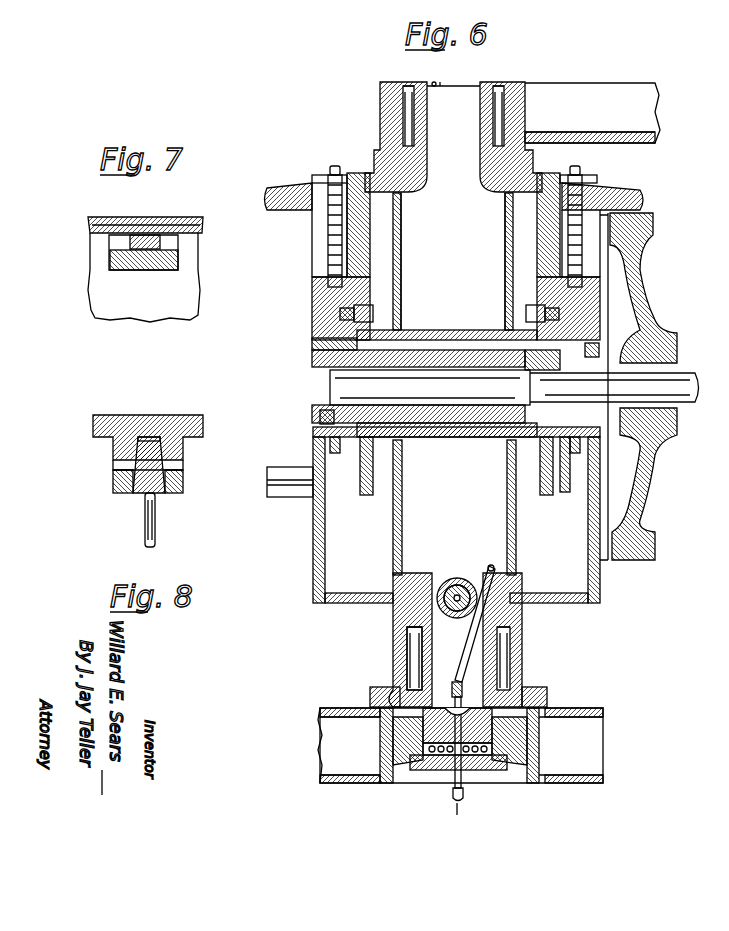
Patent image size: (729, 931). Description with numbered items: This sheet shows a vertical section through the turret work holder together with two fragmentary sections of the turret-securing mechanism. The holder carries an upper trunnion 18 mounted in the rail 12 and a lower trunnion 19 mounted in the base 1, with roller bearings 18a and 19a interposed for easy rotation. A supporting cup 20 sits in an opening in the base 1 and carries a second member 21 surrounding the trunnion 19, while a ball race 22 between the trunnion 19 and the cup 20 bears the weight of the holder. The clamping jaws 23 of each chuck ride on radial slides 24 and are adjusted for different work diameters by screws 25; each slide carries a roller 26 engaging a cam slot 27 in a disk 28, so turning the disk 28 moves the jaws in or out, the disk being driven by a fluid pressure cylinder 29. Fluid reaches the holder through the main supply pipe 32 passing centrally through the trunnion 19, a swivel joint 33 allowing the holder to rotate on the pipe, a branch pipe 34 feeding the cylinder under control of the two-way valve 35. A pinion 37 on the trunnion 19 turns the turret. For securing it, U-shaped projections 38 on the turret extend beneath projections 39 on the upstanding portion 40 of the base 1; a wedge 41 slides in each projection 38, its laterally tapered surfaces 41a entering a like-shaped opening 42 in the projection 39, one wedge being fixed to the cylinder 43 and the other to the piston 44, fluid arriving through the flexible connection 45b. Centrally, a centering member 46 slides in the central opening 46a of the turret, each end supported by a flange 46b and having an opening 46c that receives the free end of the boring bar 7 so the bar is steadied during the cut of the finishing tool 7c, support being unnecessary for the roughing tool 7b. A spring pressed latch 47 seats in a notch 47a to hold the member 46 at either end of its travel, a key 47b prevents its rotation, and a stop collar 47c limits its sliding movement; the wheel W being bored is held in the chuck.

In FIG. 6, the base 1 is at (340, 740).
In FIG. 6, the boring bar 7 is at (683, 372).
In FIG. 6, the roughing tool 7b is at (567, 462).
In FIG. 6, the finishing tool 7c is at (652, 445).
In FIG. 6, the rail 12 is at (635, 95).
In FIG. 6, the trunnion 18 is at (425, 80).
In FIG. 6, the roller bearing 18a is at (515, 82).
In FIG. 6, the trunnion 19 is at (522, 690).
In FIG. 6, the roller bearing 19a is at (407, 645).
In FIG. 6, the supporting cup 20 is at (495, 770).
In FIG. 6, the second member 21 is at (393, 665).
In FIG. 6, the ball race 22 is at (432, 760).
In FIG. 6, the clamping jaws 23 is at (272, 190).
In FIG. 6, the radial slides 24 is at (318, 303).
In FIG. 6, the screws 25 is at (334, 168).
In FIG. 6, the roller 26 is at (368, 320).
In FIG. 6, the cam slot 27 is at (722, 386).
In FIG. 6, the disk 28 is at (358, 490).
In FIG. 6, the fluid pressure cylinder 29 is at (718, 434).
In FIG. 6, the main supply pipe 32 is at (457, 818).
In FIG. 6, the swivel joint 33 is at (453, 685).
In FIG. 6, the branch pipe 34 is at (720, 486).
In FIG. 6, the two-way valve 35 is at (718, 460).
In FIG. 6, the pinion 37 is at (548, 705).
In FIG. 7, the U-shaped projections 38 is at (140, 260).
In FIG. 8, the U-shaped projections 38 is at (185, 478).
In FIG. 7, the projections 39 is at (95, 220).
In FIG. 8, the projections 39 is at (110, 445).
In FIG. 7, the upstanding portion 40 is at (165, 302).
In FIG. 7, the wedge 41 is at (150, 238).
In FIG. 8, the wedge 41 is at (172, 430).
In FIG. 8, the laterally tapered surfaces 41a is at (177, 465).
In FIG. 8, the opening 42 is at (145, 432).
In FIG. 6, the cylinder 43 is at (444, 597).
In FIG. 6, the piston 44 is at (457, 580).
In FIG. 6, the flexible connection 45b is at (488, 568).
In FIG. 6, the centering member 46 is at (440, 375).
In FIG. 6, the central opening 46a is at (412, 345).
In FIG. 6, the flange 46b is at (330, 360).
In FIG. 6, the opening 46c is at (330, 386).
In FIG. 6, the spring pressed latch 47 is at (325, 440).
In FIG. 6, the notch 47a is at (482, 438).
In FIG. 6, the key 47b is at (330, 347).
In FIG. 6, the stop collar 47c is at (598, 350).
In FIG. 6, the wheel W is at (652, 548).